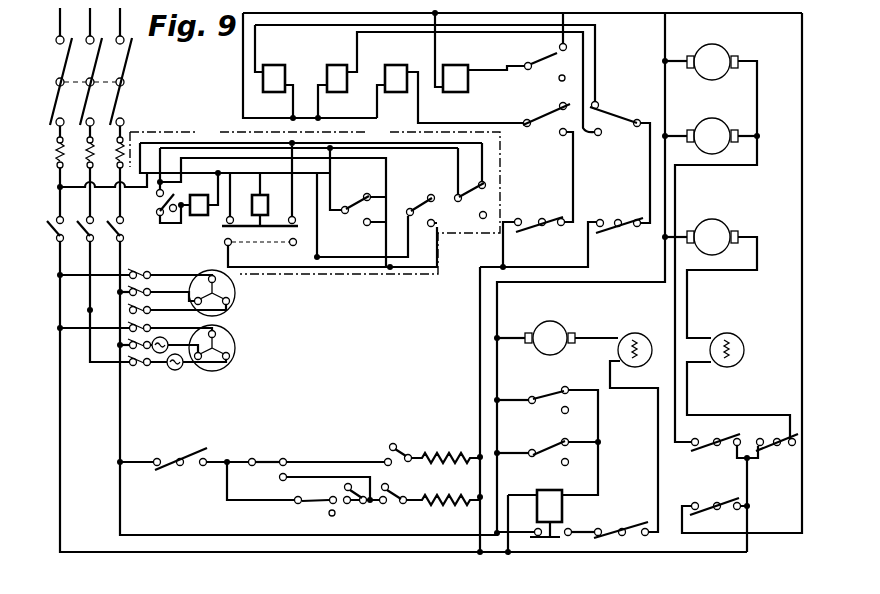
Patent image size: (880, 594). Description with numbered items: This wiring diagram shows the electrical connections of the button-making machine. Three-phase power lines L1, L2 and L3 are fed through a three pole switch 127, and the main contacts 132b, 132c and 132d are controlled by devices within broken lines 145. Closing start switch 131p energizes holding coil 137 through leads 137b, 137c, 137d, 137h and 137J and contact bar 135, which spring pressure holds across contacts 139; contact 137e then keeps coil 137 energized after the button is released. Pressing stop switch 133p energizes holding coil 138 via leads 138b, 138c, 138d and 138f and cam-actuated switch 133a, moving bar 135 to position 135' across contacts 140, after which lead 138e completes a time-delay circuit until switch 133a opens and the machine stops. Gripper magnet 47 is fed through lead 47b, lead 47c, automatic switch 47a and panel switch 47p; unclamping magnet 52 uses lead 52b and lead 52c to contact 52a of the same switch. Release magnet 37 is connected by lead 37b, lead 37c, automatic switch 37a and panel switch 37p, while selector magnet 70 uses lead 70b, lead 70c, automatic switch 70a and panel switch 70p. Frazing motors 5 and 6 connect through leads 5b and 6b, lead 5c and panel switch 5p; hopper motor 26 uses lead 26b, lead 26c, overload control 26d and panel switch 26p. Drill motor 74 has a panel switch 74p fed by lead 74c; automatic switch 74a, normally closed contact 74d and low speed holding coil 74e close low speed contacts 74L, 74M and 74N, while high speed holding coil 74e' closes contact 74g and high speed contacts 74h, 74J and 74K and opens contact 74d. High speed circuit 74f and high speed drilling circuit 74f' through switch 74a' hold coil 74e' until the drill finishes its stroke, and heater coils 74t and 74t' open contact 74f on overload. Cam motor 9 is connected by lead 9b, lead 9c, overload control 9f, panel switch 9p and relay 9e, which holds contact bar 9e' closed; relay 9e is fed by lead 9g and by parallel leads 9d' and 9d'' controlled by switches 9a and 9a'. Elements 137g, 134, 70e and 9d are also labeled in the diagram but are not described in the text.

The three pole switch 127 is at (127, 70).
The power line L1 is at (768, 492).
The power line L2 is at (678, 96).
The power line L3 is at (99, 284).
The main power line contact 132b is at (116, 241).
The main power line contact 132c is at (60, 275).
The main power line contact 132d is at (52, 230).
The drill motor 74 is at (235, 344).
The low speed winding contact 74N is at (170, 265).
The low speed winding contact 74M is at (155, 290).
The low speed winding contact 74L is at (177, 306).
The high speed winding contact 74K is at (134, 324).
The high speed winding contact 74J is at (128, 342).
The high speed winding contact 74h is at (127, 366).
The heater coil 74t is at (188, 375).
The heater coil 74t' is at (169, 373).
The lead 74c is at (139, 458).
The panel switch 74p is at (178, 458).
The automatic switch 74a is at (320, 447).
The automatic switch 74a' is at (304, 514).
The high speed circuit contact 74f is at (370, 484).
The high speed drilling circuit 74f' is at (233, 482).
The normally closed contact 74d is at (396, 445).
The low speed holding coil 74e is at (415, 447).
The high speed holding coil 74e' is at (445, 513).
The normally open contact 74g is at (354, 504).
The holding coil 137 is at (205, 192).
The lead 137J is at (162, 178).
The relay lead 137g is at (184, 172).
The contact 137e is at (158, 207).
The lead 137d is at (181, 225).
The lead 137c is at (216, 214).
The lead 137b is at (226, 247).
The lead 137h is at (254, 190).
The switch 134 is at (166, 218).
The holding coil 138 is at (257, 204).
The lead 138b is at (258, 173).
The lead 138c is at (317, 188).
The lead 138d is at (368, 266).
The lead 138e is at (318, 270).
The lead 138f is at (402, 203).
The contacts 139 is at (260, 186).
The contacts 140 is at (229, 249).
The start switch 131p is at (348, 205).
The cam-actuated stop switch 133a is at (480, 185).
The stop switch 133p is at (428, 212).
The contact bar 135 is at (294, 290).
The contact bar position 135' is at (299, 279).
The broken lines 145 is at (410, 275).
The magnet 47 is at (425, 63).
The automatic switch 47a is at (613, 111).
The lead 47b is at (290, 106).
The lead 47c is at (300, 35).
The panel switch 47p is at (611, 240).
The magnet 52 is at (337, 71).
The contact 52a is at (601, 136).
The lead 52b is at (320, 104).
The lead 52c is at (388, 36).
The magnet 37 is at (387, 68).
The automatic switch 37a is at (540, 127).
The lead 37b is at (378, 109).
The lead 37c is at (506, 112).
The panel switch 37p is at (533, 217).
The magnet 70 is at (464, 90).
The automatic switch 70a is at (545, 78).
The lead 70b is at (446, 63).
The lead 70c is at (512, 58).
The relay lead 70e is at (760, 12).
The panel switch 70p is at (700, 503).
The frazing motor 5 is at (712, 62).
The lead 5b is at (675, 55).
The lead 5c is at (752, 95).
The panel switch 5p is at (700, 438).
The frazing motor 6 is at (722, 136).
The lead 6b is at (675, 133).
The hopper motor 26 is at (712, 237).
The lead 26b is at (680, 230).
The lead 26c is at (689, 296).
The overload control 26d is at (745, 348).
The panel switch 26p is at (776, 438).
The cam motor 9 is at (571, 338).
The automatic switch 9a is at (546, 436).
The automatic switch 9a' is at (547, 443).
The lead 9b is at (498, 345).
The lead 9c is at (604, 338).
The contact 9d is at (595, 414).
The lead 9d' is at (586, 370).
The lead 9d'' is at (575, 443).
The relay 9e is at (558, 513).
The contact bar 9e' is at (565, 555).
The overload control 9f is at (645, 336).
The lead 9g is at (527, 493).
The panel switch 9p is at (633, 525).